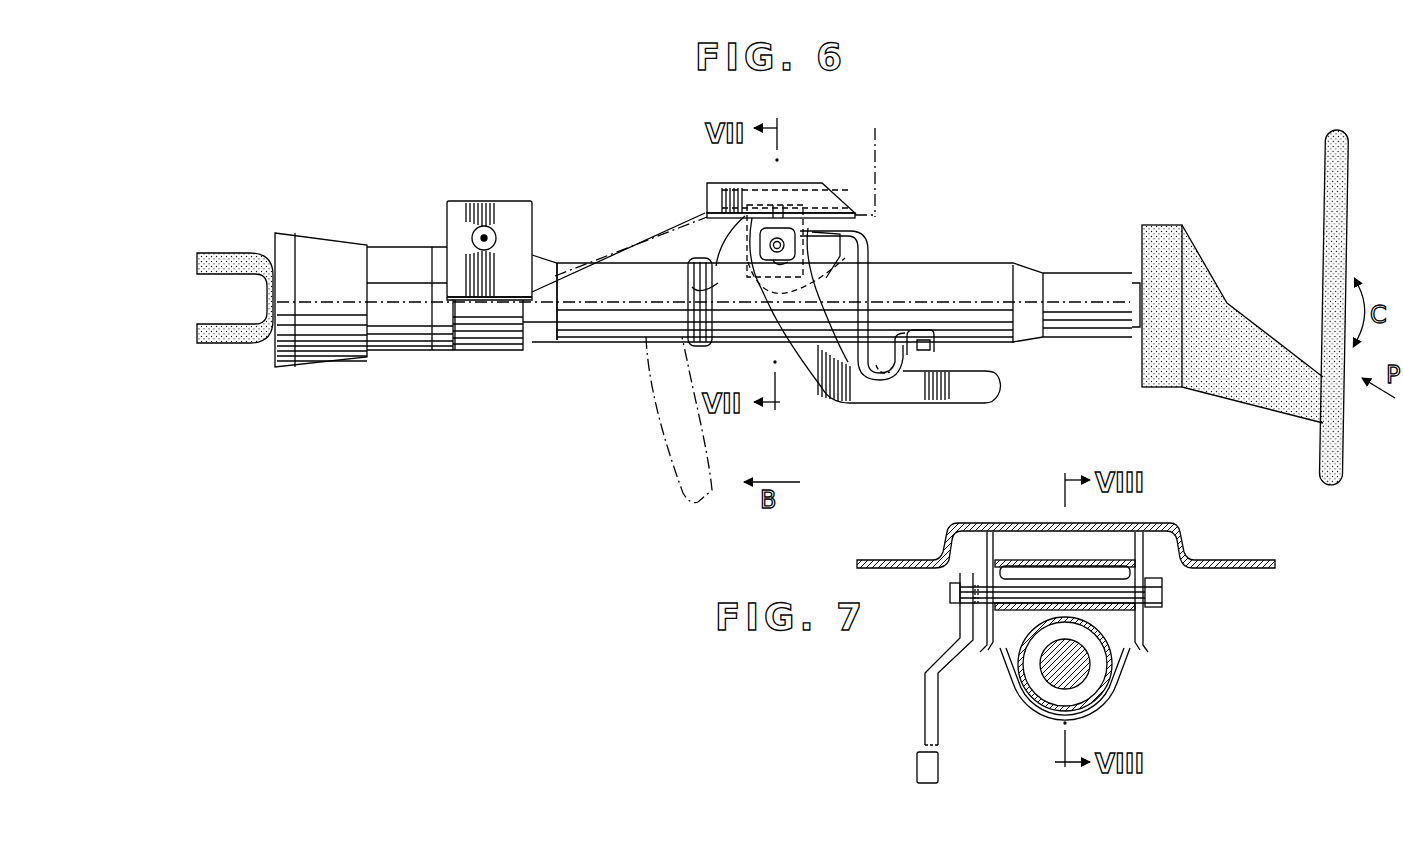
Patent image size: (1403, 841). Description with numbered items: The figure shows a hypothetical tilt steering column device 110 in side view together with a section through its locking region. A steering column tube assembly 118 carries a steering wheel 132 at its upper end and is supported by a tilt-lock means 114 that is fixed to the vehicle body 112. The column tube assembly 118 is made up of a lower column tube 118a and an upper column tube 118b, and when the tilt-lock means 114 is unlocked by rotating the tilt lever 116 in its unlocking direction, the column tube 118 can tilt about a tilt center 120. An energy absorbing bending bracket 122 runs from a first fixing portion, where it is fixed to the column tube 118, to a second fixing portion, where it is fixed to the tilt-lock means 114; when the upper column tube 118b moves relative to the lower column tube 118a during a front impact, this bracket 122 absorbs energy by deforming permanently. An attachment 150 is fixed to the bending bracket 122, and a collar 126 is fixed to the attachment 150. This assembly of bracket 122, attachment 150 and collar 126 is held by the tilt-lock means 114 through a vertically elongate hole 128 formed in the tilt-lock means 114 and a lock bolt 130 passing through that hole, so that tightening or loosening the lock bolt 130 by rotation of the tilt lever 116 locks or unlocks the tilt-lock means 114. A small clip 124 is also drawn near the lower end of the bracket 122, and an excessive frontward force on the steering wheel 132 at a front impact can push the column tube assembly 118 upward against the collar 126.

In FIG. 6, the tilt steering column device 110 is at (1071, 345).
In FIG. 6, the vehicle body 112 is at (877, 160).
In FIG. 6, the tilt-lock means 114 is at (757, 186).
In FIG. 7, the tilt-lock means 114 is at (1018, 548).
In FIG. 6, the tilt lever 116 is at (905, 395).
In FIG. 7, the tilt lever 116 is at (925, 700).
In FIG. 6, the steering column tube assembly 118 is at (616, 325).
In FIG. 7, the steering column tube assembly 118 is at (1092, 680).
In FIG. 6, the lower column tube 118a is at (473, 350).
In FIG. 6, the upper column tube 118b is at (555, 343).
In FIG. 6, the tilt center 120 is at (498, 238).
In FIG. 6, the energy absorbing bending bracket 122 is at (866, 236).
In FIG. 7, the energy absorbing bending bracket 122 is at (1115, 568).
In FIG. 6, the retaining clip 124 is at (926, 350).
In FIG. 6, the collar 126 is at (860, 257).
In FIG. 7, the collar 126 is at (1112, 612).
In FIG. 6, the vertically elongate hole 128 is at (773, 277).
In FIG. 7, the vertically elongate hole 128 is at (985, 578).
In FIG. 6, the lock bolt 130 is at (778, 236).
In FIG. 7, the lock bolt 130 is at (1145, 592).
In FIG. 6, the steering wheel 132 is at (1325, 183).
In FIG. 6, the attachment 150 is at (747, 244).
In FIG. 7, the attachment 150 is at (1087, 564).